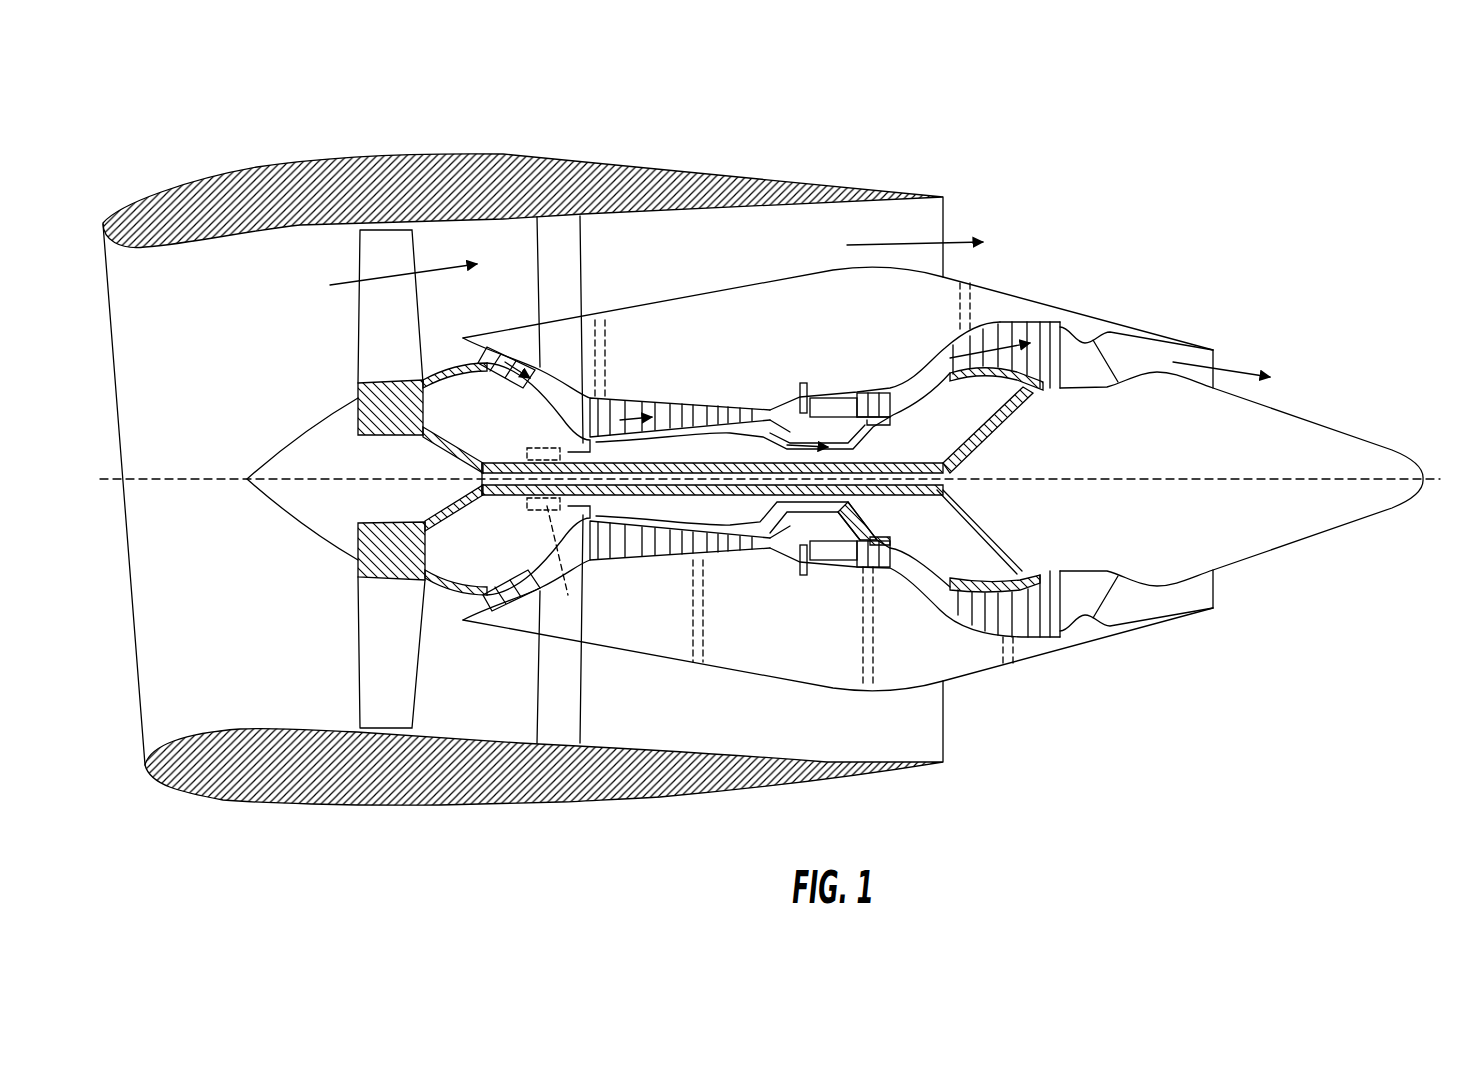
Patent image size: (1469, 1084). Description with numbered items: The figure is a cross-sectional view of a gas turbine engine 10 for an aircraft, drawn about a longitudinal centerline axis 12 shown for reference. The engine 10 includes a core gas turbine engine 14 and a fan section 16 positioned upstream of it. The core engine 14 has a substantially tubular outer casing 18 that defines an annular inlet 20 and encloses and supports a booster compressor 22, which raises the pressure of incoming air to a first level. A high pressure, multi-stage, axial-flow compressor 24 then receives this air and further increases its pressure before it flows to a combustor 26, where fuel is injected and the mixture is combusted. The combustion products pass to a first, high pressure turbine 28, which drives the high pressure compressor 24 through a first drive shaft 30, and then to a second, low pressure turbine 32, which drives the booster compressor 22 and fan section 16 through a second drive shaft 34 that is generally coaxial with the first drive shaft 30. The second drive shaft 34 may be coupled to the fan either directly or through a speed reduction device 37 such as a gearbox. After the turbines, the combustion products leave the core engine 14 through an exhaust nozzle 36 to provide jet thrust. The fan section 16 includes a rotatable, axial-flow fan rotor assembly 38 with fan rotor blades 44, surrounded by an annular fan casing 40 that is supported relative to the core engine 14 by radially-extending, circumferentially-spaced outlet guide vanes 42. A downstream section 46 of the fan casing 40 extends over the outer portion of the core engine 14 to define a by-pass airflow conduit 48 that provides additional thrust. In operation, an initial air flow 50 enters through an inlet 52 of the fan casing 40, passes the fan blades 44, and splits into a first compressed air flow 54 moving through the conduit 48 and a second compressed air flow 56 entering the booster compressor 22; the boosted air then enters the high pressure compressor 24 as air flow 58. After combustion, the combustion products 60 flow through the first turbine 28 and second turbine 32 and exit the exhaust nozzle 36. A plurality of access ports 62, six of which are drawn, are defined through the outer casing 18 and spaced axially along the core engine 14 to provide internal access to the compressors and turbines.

The gas turbine engine 10 is at (1115, 160).
The centerline axis 12 is at (1158, 477).
The core gas turbine engine 14 is at (780, 345).
The fan section 16 is at (403, 138).
The outer casing 18 is at (762, 675).
The annular inlet 20 is at (478, 605).
The booster compressor 22 is at (540, 585).
The high pressure compressor 24 is at (625, 555).
The combustor 26 is at (827, 563).
The first turbine 28 is at (903, 557).
The first drive shaft 30 is at (848, 430).
The second turbine 32 is at (1055, 640).
The second drive shaft 34 is at (543, 455).
The exhaust nozzle 36 is at (1213, 355).
The speed reduction device 37 is at (557, 575).
The fan rotor assembly 38 is at (422, 437).
The fan casing 40 is at (410, 795).
The outlet guide vanes 42 is at (585, 243).
The fan rotor blades 44 is at (360, 673).
The downstream section 46 is at (815, 185).
The by-pass airflow conduit 48 is at (716, 250).
The initial air flow 50 is at (120, 479).
The inlet 52 is at (140, 725).
The first compressed air flow 54 is at (365, 272).
The second compressed air flow 56 is at (445, 352).
The air flow into high pressure compressor 58 is at (610, 417).
The combustion products 60 is at (875, 400).
The access ports 62 is at (610, 335).